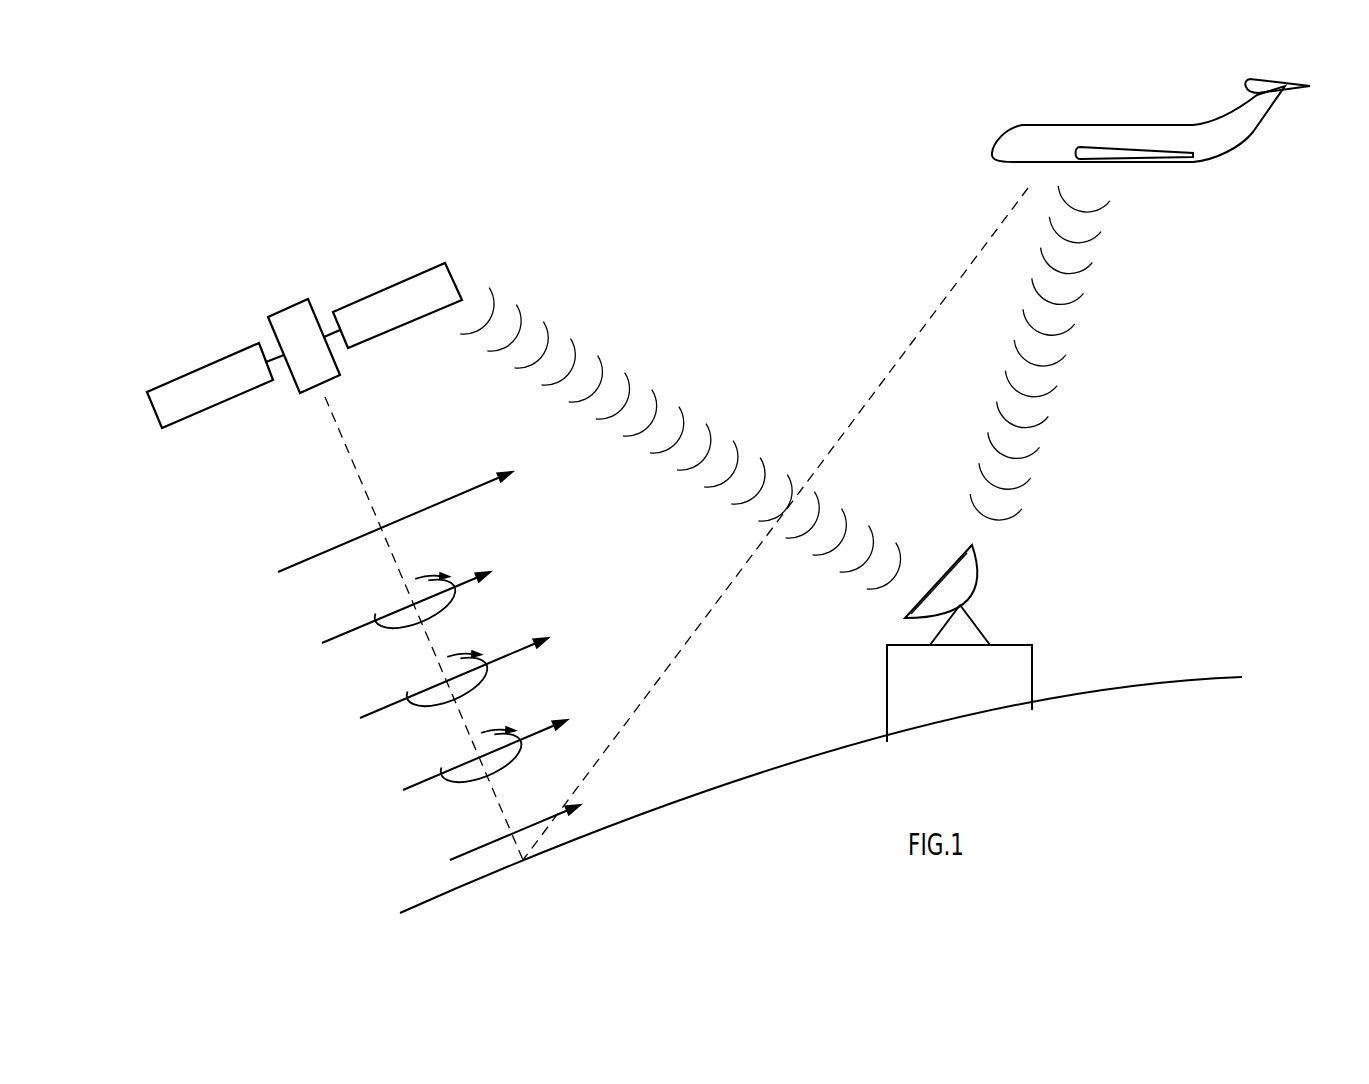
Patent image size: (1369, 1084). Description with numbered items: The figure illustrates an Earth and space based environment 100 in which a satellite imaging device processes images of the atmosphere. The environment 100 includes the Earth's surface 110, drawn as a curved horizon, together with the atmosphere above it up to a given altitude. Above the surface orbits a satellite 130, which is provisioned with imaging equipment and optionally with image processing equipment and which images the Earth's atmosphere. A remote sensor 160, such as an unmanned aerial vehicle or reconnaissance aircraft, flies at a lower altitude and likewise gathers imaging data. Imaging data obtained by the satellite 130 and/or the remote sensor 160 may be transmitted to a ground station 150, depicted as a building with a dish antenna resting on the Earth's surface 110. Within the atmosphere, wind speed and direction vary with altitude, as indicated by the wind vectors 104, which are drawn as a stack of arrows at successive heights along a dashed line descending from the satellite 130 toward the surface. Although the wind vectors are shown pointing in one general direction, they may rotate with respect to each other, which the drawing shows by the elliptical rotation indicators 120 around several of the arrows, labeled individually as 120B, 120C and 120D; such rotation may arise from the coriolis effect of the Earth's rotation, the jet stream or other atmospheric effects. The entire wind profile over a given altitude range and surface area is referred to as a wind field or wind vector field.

The Earth and space based environment 100 is at (226, 262).
The satellite 130 is at (187, 418).
The remote sensor 160 is at (1167, 165).
The ground station 150 is at (1032, 677).
The Earth's surface 110 is at (1135, 688).
The wind vectors (A-E) 104 is at (708, 691).
The wind vector rotations about an axis perpendicular to the earth's surface 120 is at (311, 717).
The wind vector rotation 120B is at (440, 785).
The wind vector rotation 120C is at (407, 710).
The wind vector rotation 120D is at (375, 627).